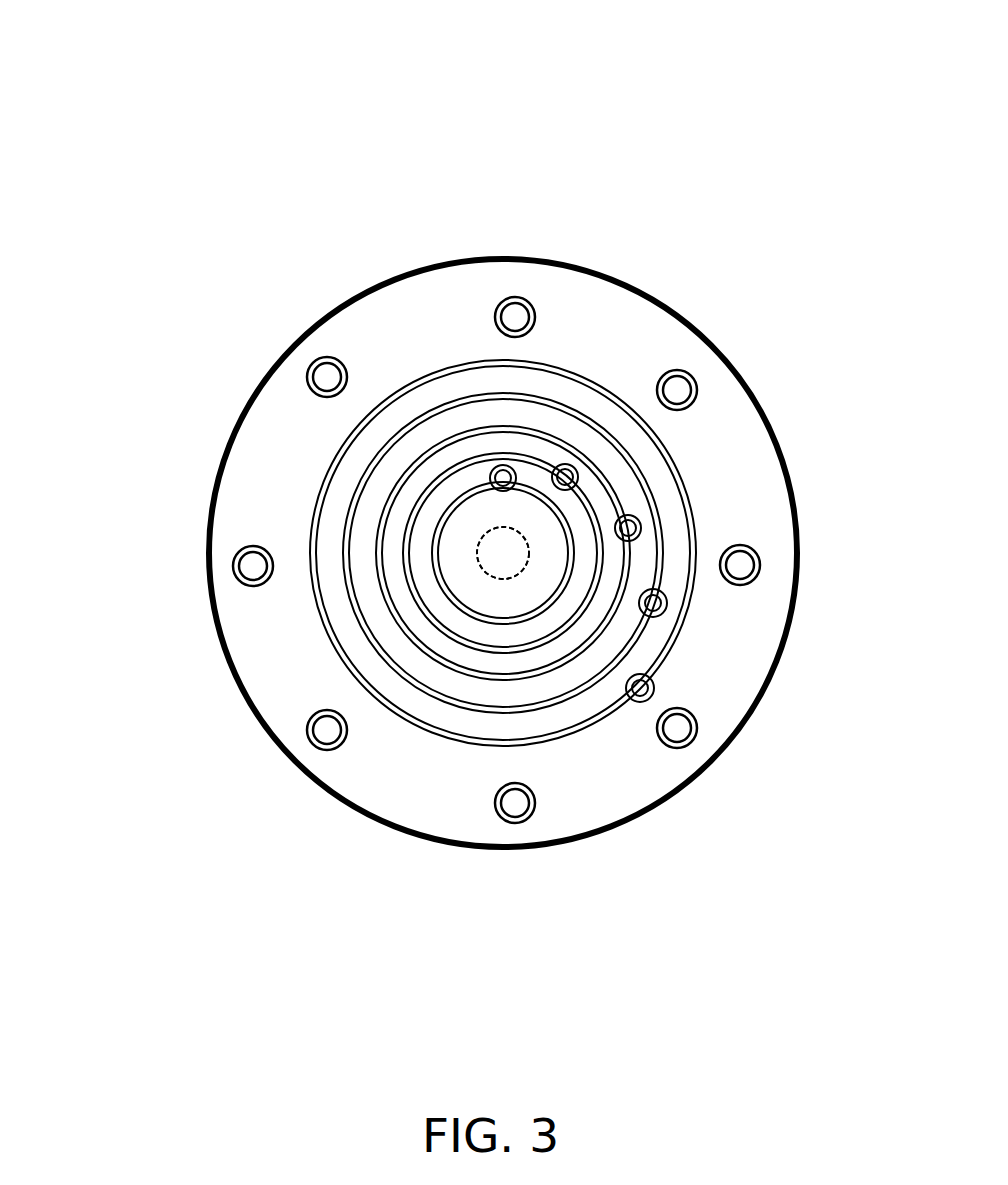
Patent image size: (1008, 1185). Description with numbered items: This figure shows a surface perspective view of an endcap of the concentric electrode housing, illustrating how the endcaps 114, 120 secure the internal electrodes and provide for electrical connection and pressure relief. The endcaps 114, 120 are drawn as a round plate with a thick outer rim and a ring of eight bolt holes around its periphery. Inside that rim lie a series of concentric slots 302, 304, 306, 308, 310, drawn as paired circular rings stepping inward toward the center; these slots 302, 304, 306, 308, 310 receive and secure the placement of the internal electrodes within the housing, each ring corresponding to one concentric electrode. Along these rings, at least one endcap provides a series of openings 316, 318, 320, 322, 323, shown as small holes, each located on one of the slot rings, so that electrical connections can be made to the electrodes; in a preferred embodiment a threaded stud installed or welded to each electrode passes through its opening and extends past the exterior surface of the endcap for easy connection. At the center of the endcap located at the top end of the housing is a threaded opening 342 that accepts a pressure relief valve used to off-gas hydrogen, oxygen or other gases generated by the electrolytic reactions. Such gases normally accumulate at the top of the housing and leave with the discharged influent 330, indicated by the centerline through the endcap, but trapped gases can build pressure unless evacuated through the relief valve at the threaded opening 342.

The endcap 114 is at (407, 553).
The endcap 120 is at (263, 615).
The slot 302 is at (409, 378).
The slot 304 is at (417, 362).
The slot 306 is at (425, 345).
The slot 308 is at (437, 332).
The slot 310 is at (454, 317).
The opening 316 is at (697, 463).
The opening 318 is at (578, 477).
The opening 320 is at (641, 527).
The opening 322 is at (667, 602).
The opening 323 is at (654, 690).
The discharged influent 330 is at (510, 516).
The threaded opening 342 is at (492, 577).